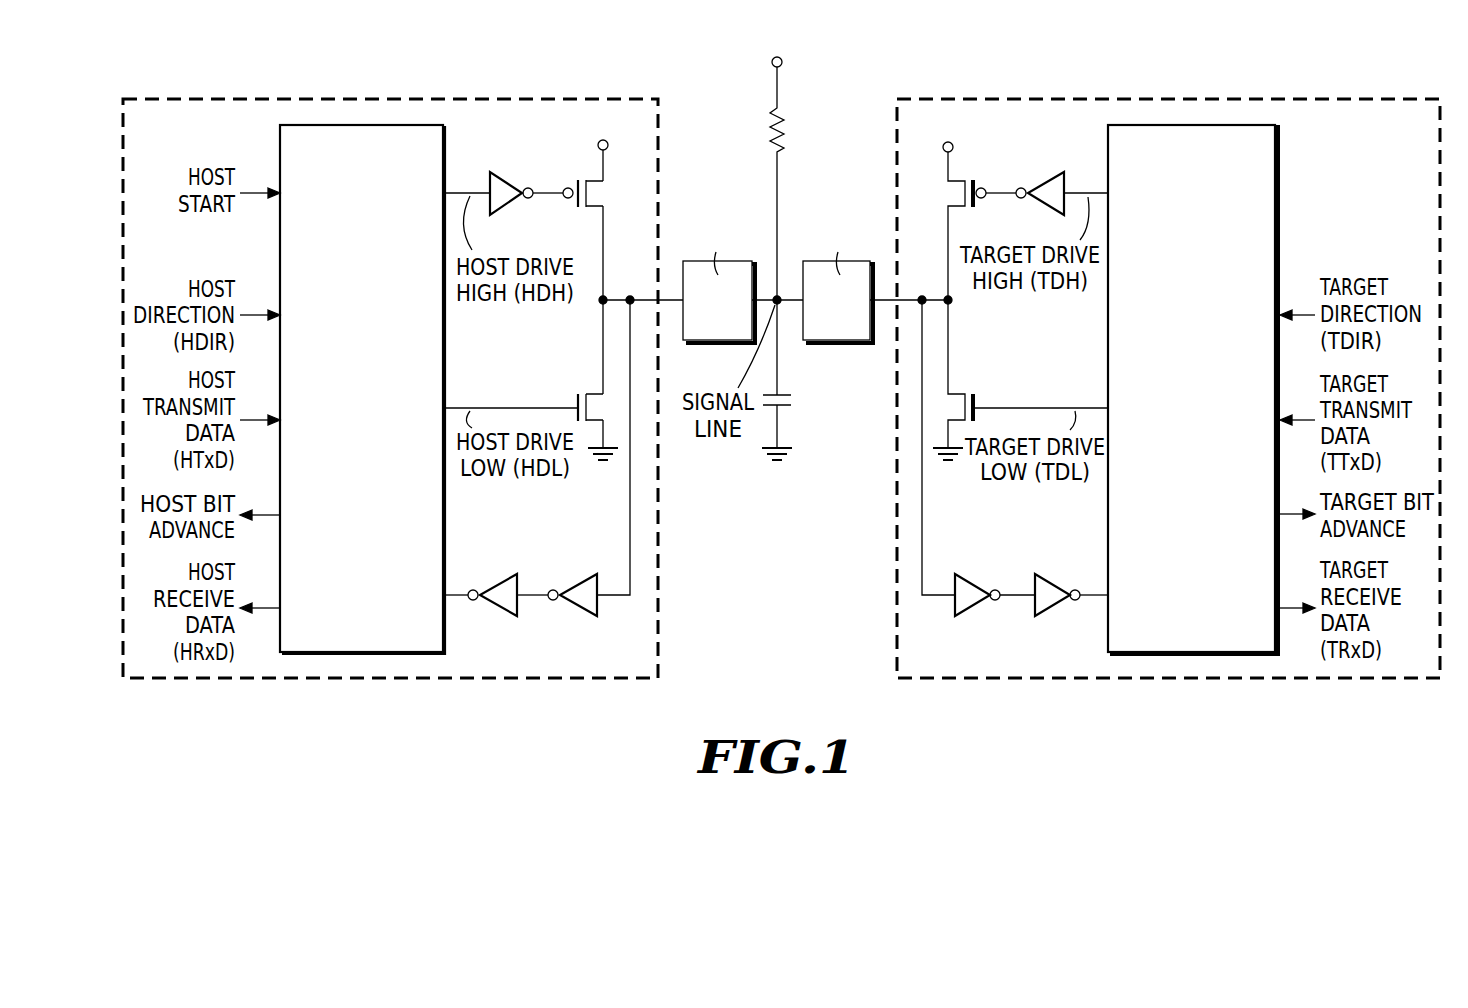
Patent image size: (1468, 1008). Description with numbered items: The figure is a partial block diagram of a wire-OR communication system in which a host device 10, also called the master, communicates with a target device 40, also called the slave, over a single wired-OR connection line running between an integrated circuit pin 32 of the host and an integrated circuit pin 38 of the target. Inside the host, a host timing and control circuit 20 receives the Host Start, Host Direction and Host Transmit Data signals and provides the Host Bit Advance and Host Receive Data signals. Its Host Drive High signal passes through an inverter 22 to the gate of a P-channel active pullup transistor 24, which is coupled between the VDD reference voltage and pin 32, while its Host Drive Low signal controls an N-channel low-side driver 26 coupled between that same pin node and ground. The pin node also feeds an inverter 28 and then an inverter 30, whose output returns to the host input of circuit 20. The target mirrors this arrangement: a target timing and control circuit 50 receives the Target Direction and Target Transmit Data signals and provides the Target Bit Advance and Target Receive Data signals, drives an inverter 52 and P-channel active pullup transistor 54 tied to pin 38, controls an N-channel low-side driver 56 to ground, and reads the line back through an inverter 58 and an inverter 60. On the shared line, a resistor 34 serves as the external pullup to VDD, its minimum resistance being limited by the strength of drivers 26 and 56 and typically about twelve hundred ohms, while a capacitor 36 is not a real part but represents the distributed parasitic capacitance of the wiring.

The host device 10 is at (238, 98).
The host timing and control circuit 20 is at (346, 367).
The inverter 22 is at (517, 205).
The P-channel active pullup transistor 24 is at (582, 180).
The N-channel low-side driver 26 is at (581, 394).
The inverter 28 is at (574, 583).
The inverter 30 is at (494, 583).
The integrated circuit pin 32 is at (722, 344).
The resistor 34 is at (786, 130).
The capacitor 36 is at (790, 398).
The integrated circuit pin 38 is at (842, 344).
The target device 40 is at (1010, 98).
The target timing and control circuit 50 is at (1177, 362).
The inverter 52 is at (1043, 178).
The P-channel active pullup transistor 54 is at (978, 208).
The N-channel low-side driver 56 is at (976, 393).
The inverter 58 is at (973, 585).
The inverter 60 is at (1052, 585).